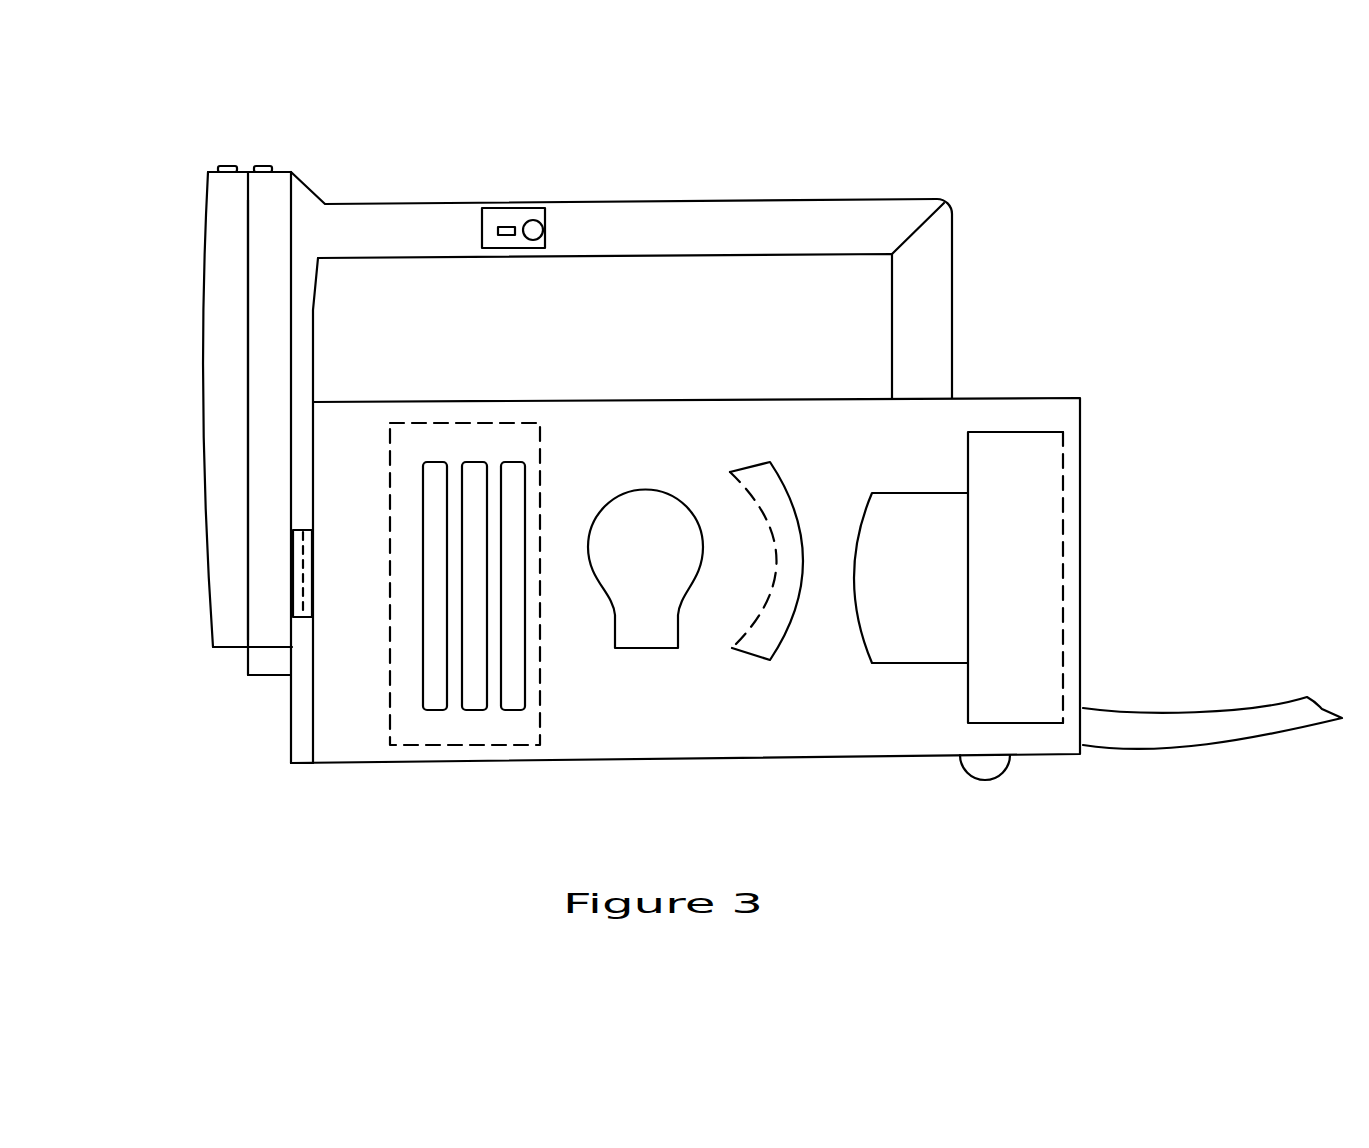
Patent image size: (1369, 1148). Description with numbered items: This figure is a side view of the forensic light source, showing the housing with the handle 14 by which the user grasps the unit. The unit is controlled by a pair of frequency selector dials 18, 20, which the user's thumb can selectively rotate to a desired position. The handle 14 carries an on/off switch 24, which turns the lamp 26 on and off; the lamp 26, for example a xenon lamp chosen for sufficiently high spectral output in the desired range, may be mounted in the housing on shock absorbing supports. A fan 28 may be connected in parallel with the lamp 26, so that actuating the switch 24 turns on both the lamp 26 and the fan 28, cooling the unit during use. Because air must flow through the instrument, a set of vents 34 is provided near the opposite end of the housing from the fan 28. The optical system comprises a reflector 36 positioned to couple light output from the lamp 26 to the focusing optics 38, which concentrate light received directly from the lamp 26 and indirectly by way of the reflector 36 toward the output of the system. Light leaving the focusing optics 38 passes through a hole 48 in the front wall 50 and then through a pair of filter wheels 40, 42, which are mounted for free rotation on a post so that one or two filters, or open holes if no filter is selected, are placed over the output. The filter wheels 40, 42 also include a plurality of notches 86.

The handle 14 is at (730, 225).
The frequency selector dial 18 is at (262, 163).
The frequency selector dial 20 is at (227, 163).
The on/off switch 24 is at (510, 225).
The lamp 26 is at (635, 648).
The fan 28 is at (1008, 688).
The vents 34 is at (423, 707).
The reflector 36 is at (783, 483).
The focusing optics 38 is at (427, 747).
The filter wheel 40 is at (230, 640).
The filter wheel 42 is at (278, 367).
The hole 48 is at (303, 617).
The front wall 50 is at (292, 755).
The notches 86 is at (200, 355).